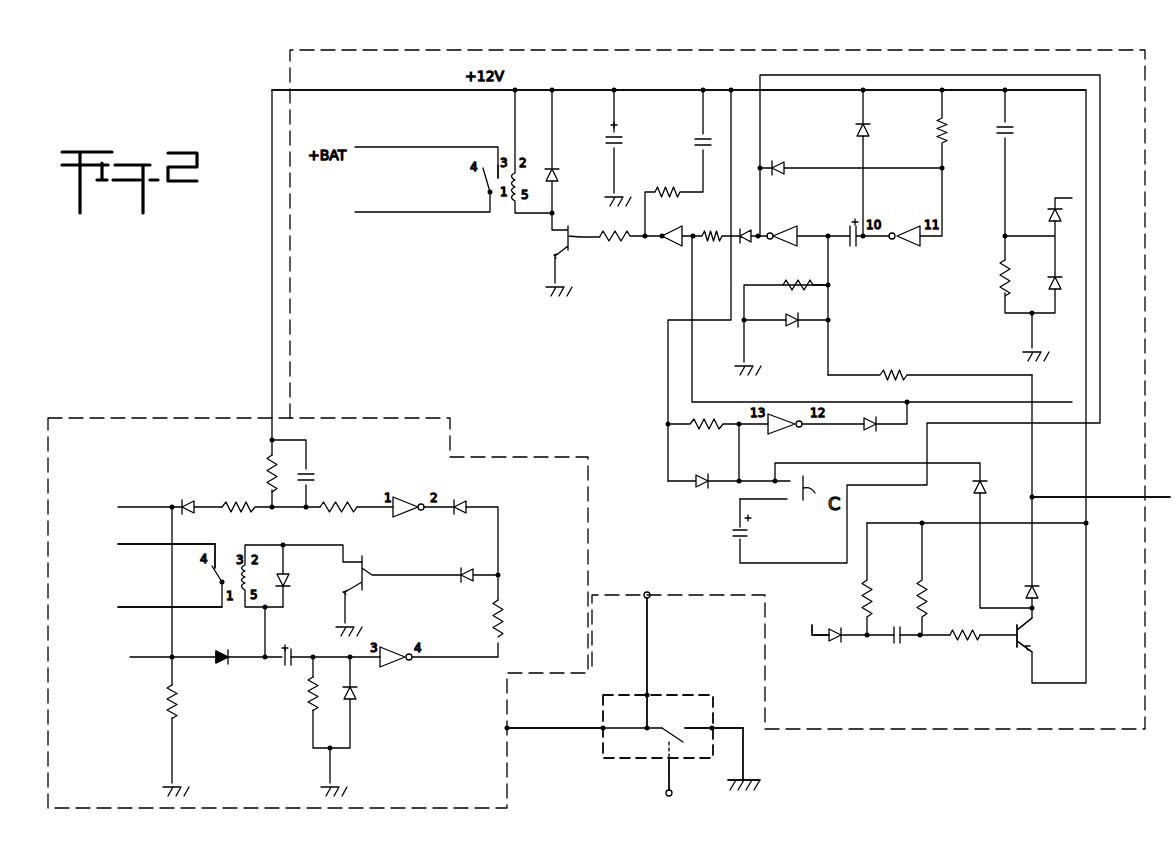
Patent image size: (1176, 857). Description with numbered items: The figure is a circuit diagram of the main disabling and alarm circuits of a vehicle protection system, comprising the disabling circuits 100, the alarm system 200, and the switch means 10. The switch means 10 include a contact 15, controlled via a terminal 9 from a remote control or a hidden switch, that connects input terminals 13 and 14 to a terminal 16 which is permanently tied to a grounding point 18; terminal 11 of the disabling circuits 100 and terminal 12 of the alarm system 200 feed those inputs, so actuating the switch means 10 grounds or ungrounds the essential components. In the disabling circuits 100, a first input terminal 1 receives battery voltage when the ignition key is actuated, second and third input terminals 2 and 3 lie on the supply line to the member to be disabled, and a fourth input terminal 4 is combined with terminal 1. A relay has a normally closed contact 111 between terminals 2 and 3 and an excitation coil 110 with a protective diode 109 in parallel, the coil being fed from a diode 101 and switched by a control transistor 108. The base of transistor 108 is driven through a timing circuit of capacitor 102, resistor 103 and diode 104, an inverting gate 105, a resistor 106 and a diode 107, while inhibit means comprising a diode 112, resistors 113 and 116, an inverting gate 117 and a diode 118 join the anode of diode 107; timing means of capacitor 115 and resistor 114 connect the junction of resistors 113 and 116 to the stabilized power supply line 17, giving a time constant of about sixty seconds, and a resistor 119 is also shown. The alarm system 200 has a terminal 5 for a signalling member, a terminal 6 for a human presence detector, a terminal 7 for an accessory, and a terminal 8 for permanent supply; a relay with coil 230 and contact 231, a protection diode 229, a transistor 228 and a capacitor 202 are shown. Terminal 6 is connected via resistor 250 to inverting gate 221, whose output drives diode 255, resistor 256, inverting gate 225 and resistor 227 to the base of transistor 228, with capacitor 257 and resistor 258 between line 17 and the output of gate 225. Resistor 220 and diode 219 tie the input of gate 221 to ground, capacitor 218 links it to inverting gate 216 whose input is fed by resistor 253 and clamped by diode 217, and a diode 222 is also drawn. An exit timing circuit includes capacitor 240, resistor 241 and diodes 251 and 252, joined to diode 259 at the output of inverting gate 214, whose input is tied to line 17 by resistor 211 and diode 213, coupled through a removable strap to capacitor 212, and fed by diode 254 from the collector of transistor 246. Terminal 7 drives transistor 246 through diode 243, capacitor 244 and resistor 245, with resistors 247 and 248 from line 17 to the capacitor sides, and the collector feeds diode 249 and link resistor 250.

The first input terminal 1 is at (130, 657).
The second input terminal 2 is at (118, 607).
The third input terminal 3 is at (118, 544).
The fourth input terminal 4 is at (118, 507).
The terminal 5 is at (355, 212).
The terminal 6 is at (1168, 507).
The terminal 7 is at (810, 642).
The terminal 8 is at (355, 147).
The terminal 9 is at (665, 793).
The switch means 10 is at (630, 689).
The terminal 11 is at (508, 725).
The terminal 12 is at (650, 596).
The input terminal 13 is at (600, 738).
The input terminal 14 is at (650, 694).
The contact 15 is at (665, 734).
The terminal 16 is at (713, 722).
The power supply line 17 is at (703, 89).
The grounding point 18 is at (752, 775).
The disabling circuits 100 is at (193, 413).
The diode 101 is at (223, 668).
The capacitor 102 is at (291, 648).
The resistor 103 is at (311, 703).
The diode 104 is at (356, 702).
The inverting gate 105 is at (412, 665).
The resistor 106 is at (502, 622).
The diode 107 is at (462, 572).
The control transistor 108 is at (353, 556).
The protective diode 109 is at (288, 577).
The excitation coil 110 is at (266, 576).
The contact 111 is at (218, 574).
The diode 112 is at (186, 498).
The resistor 113 is at (249, 502).
The resistor 114 is at (266, 462).
The capacitor 115 is at (308, 478).
The resistor 116 is at (340, 505).
The inverting gate 117 is at (405, 513).
The diode 118 is at (470, 504).
The resistor 119 is at (170, 712).
The alarm system 200 is at (286, 291).
The capacitor 202 is at (620, 150).
The resistor 211 is at (708, 432).
The capacitor 212 is at (748, 538).
The diode 213 is at (702, 490).
The inverting gate 214 is at (790, 432).
The inverting gate 216 is at (895, 229).
The diode 217 is at (869, 130).
The capacitor 218 is at (853, 246).
The diode 219 is at (790, 323).
The resistor 220 is at (813, 287).
The inverting gate 221 is at (792, 229).
The diode 222 is at (778, 165).
The inverting gate 225 is at (675, 255).
The resistor 227 is at (628, 255).
The transistor 228 is at (565, 254).
The protection diode 229 is at (554, 170).
The relay coil 230 is at (516, 162).
The relay contact 231 is at (488, 180).
The capacitor 240 is at (1015, 140).
The resistor 241 is at (1003, 288).
The diode 243 is at (837, 645).
The capacitor 244 is at (897, 645).
The resistor 245 is at (968, 640).
The transistor 246 is at (1028, 640).
The resistor 247 is at (865, 600).
The resistor 248 is at (925, 587).
The diode 249 is at (1028, 586).
The link resistor 250 is at (903, 371).
The diode 251 is at (1065, 281).
The diode 252 is at (1048, 215).
The resistor 253 is at (945, 131).
The diode 254 is at (973, 487).
The diode 255 is at (745, 250).
The resistor 256 is at (708, 248).
The capacitor 257 is at (700, 140).
The resistor 258 is at (654, 195).
The diode 259 is at (866, 428).